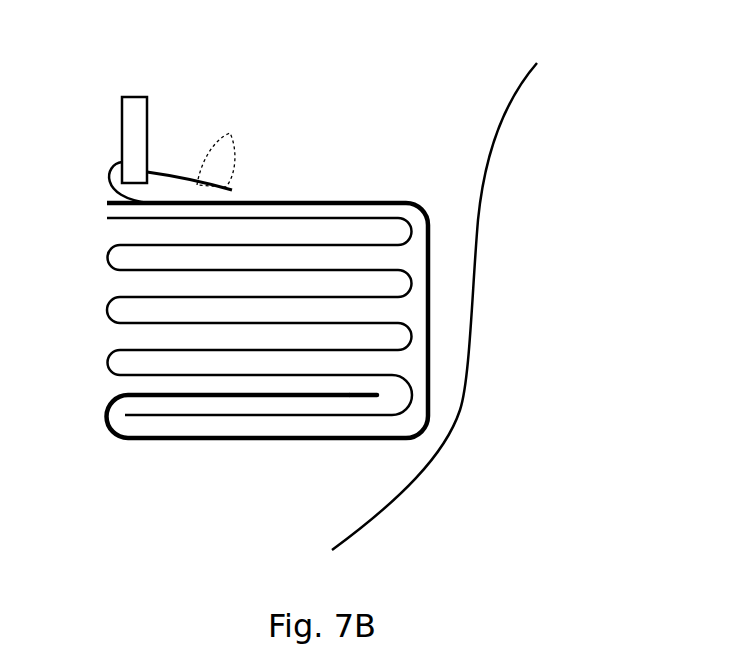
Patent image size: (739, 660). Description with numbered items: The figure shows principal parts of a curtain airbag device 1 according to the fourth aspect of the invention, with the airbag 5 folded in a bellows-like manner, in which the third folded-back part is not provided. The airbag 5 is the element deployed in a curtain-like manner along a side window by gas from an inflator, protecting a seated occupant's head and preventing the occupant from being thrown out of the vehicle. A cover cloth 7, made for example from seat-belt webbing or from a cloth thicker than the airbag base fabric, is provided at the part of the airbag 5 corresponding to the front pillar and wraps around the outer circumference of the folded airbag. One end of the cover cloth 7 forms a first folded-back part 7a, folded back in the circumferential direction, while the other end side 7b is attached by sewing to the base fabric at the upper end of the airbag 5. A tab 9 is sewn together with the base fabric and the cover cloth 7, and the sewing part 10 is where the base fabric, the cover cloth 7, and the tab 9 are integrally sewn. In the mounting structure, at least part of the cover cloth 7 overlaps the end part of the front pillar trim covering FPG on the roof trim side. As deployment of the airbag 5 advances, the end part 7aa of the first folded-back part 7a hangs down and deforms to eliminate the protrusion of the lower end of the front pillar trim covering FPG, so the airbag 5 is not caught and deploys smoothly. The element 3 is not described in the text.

The curtain airbag device 1 is at (422, 90).
The electronic component 3 is at (133, 127).
The airbag 5 is at (107, 308).
The cover cloth 7 is at (365, 199).
The first folded-back part 7a is at (245, 400).
The end part of the first folded-back part 7aa is at (380, 400).
The other end side 7b is at (430, 352).
The tab 9 is at (166, 177).
The sewing part 10 is at (225, 144).
The front pillar trim covering FPG is at (478, 215).